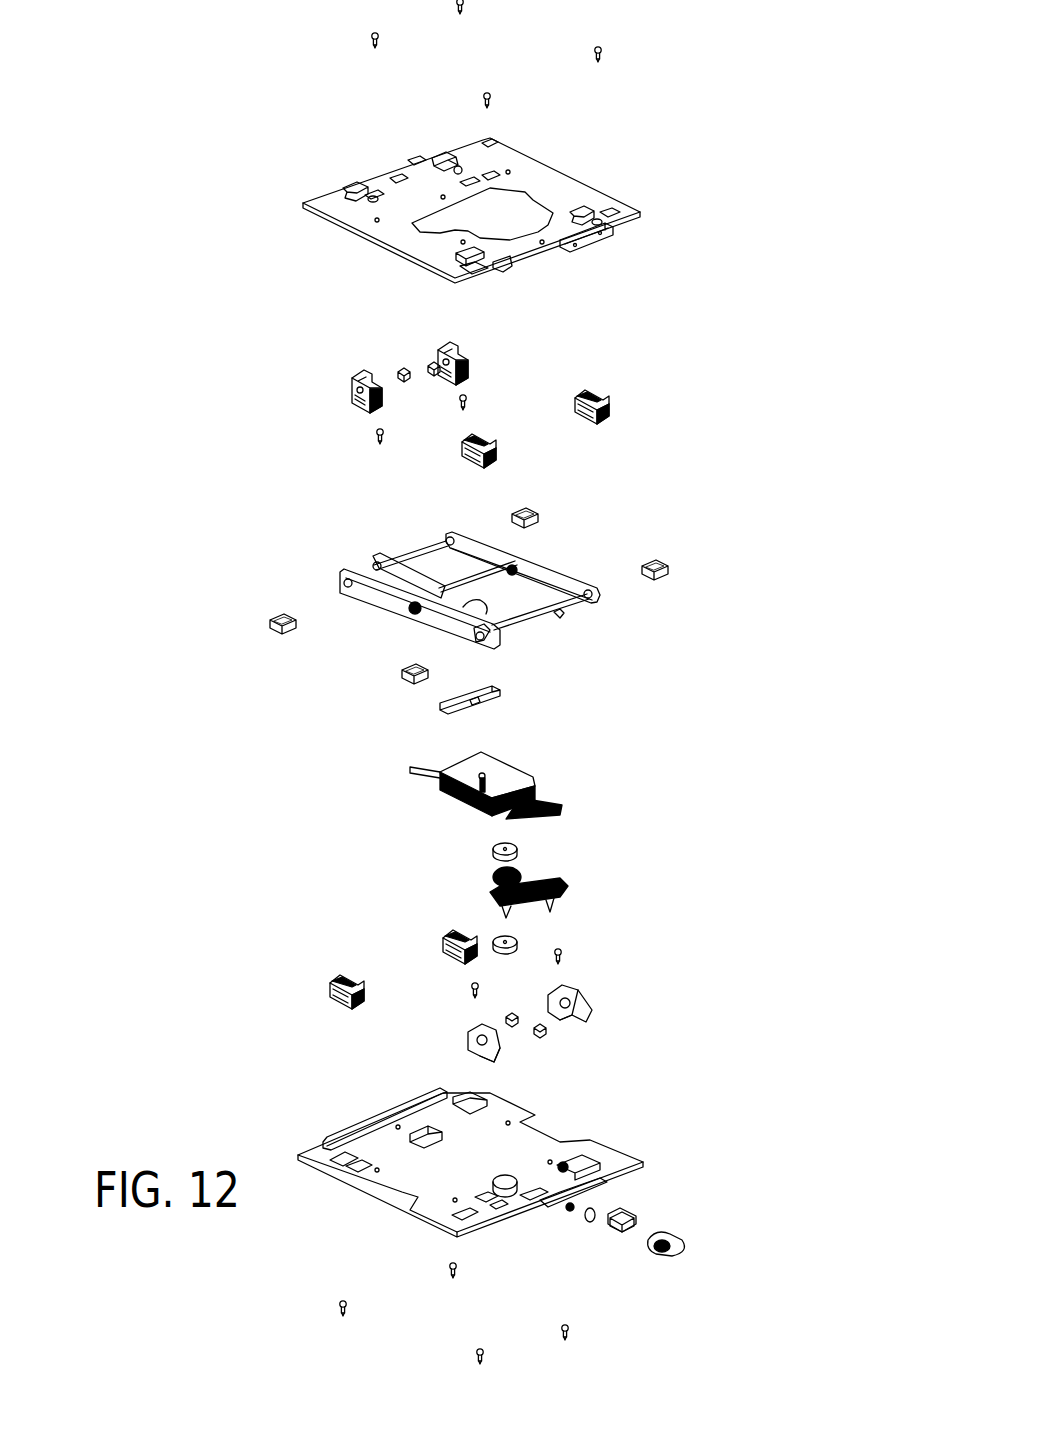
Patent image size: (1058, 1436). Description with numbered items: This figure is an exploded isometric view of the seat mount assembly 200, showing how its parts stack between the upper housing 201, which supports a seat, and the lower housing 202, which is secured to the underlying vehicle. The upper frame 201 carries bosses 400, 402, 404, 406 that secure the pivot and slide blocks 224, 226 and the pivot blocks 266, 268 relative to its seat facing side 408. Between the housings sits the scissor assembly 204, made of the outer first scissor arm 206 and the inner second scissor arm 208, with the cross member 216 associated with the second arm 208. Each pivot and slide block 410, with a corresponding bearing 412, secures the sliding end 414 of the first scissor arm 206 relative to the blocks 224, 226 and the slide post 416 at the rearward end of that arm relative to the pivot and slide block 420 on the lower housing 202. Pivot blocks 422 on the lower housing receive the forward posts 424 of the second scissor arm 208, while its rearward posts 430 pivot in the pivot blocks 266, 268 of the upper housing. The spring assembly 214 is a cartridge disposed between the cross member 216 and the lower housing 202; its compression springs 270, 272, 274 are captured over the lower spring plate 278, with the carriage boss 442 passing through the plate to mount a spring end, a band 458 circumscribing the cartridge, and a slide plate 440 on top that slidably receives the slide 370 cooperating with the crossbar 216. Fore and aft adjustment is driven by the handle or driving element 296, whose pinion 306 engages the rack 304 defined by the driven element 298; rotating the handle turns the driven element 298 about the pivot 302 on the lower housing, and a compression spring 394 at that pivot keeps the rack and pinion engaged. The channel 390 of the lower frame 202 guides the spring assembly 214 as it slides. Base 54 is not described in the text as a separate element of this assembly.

The seat mount assembly 200 is at (790, 128).
The upper housing 201 is at (520, 155).
The boss 402 is at (436, 158).
The boss 404 is at (343, 190).
The boss 400 is at (592, 210).
The boss 406 is at (454, 258).
The seat facing side 408 is at (614, 252).
The bearing 412 is at (432, 364).
The pivot block 266 is at (476, 370).
The pivot block 268 is at (355, 388).
The pivot and slide block 224 is at (612, 418).
The pivot and slide block 226 is at (497, 462).
The first scissor arm 206 is at (480, 581).
The cross member 216 is at (435, 560).
The second scissor arm 208 is at (520, 625).
The post 430 is at (467, 538).
The slide post 416 is at (345, 592).
The sliding end 414 is at (486, 636).
The post 424 is at (596, 602).
The scissor assembly 204 is at (258, 582).
The pivot and slide block 410 is at (538, 518).
The slide 370 is at (496, 702).
The spring assembly 214 is at (644, 737).
The slide plate 440 is at (505, 765).
The band 458 is at (440, 790).
The compression spring 270 is at (435, 793).
The compression spring 272 is at (540, 802).
The lower spring plate 278 is at (460, 808).
The boss 442 is at (490, 818).
The compression spring 274 is at (508, 822).
The pivot 302 is at (492, 857).
The compression spring 394 is at (490, 885).
The driven element 298 is at (560, 880).
The pinion 306 is at (540, 914).
The pivot and slide block 420 is at (335, 998).
The pivot block 422 is at (580, 1000).
The channel 390 is at (424, 1134).
The lower housing 202 is at (501, 1139).
The base 54 is at (390, 1185).
The rack 304 is at (618, 1218).
The driving element 296 is at (670, 1238).